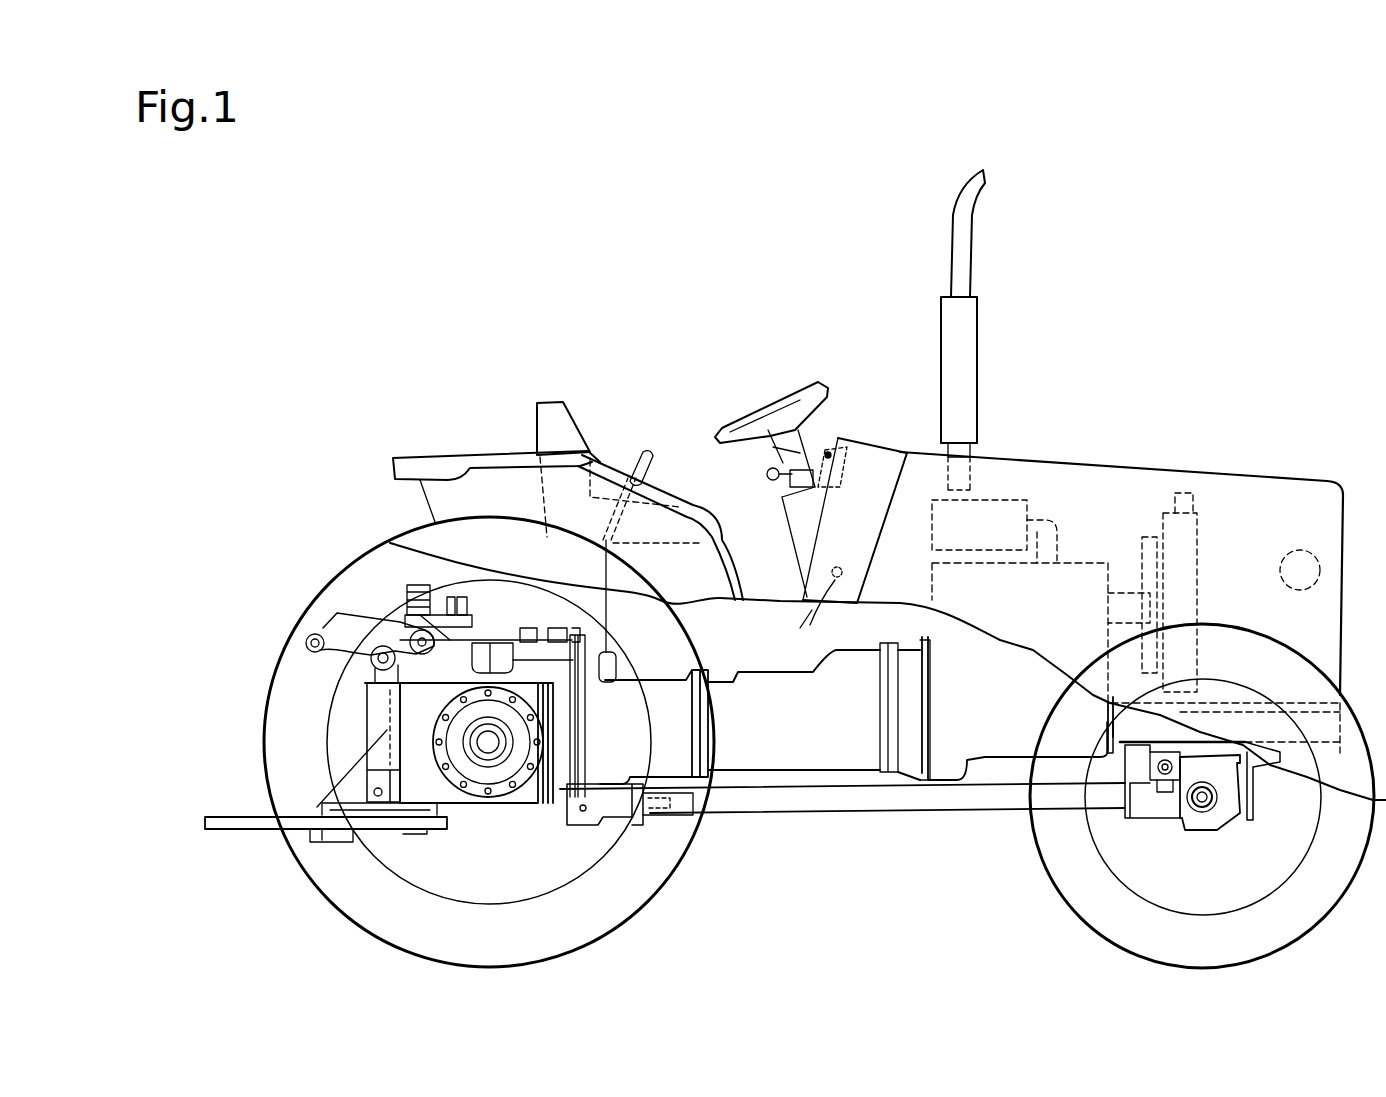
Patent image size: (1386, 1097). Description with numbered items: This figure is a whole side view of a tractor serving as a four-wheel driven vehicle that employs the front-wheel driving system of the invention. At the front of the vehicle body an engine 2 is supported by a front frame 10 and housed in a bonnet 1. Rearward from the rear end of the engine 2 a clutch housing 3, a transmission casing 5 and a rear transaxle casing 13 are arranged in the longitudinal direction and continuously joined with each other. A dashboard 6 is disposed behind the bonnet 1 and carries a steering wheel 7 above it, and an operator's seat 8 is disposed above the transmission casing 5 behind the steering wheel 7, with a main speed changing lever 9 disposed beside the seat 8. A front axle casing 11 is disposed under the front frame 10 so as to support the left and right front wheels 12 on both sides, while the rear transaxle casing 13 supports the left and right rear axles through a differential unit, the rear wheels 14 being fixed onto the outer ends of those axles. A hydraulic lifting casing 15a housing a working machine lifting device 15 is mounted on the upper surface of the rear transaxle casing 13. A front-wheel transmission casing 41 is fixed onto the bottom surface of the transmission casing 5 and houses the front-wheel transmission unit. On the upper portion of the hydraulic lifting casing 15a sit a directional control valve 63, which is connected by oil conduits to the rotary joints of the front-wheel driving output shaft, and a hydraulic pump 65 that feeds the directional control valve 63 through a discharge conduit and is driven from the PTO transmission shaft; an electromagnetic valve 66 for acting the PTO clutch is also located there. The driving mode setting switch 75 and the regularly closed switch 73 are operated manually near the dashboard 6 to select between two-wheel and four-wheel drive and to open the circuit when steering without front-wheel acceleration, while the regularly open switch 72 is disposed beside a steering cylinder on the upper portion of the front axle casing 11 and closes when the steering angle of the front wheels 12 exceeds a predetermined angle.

The bonnet 1 is at (1250, 475).
The engine 2 is at (998, 730).
The clutch housing 3 is at (810, 743).
The transmission casing 5 is at (672, 760).
The dashboard 6 is at (900, 450).
The steering wheel 7 is at (775, 390).
The operator's seat 8 is at (568, 400).
The main speed changing lever 9 is at (648, 450).
The front frame 10 is at (1133, 787).
The front axle casing 11 is at (1217, 807).
The front wheels 12 is at (1077, 910).
The rear transaxle casing 13 is at (492, 806).
The rear wheels 14 is at (580, 953).
The working machine lifting device 15 is at (262, 645).
The hydraulic lifting casing 15a is at (403, 611).
The front-wheel transmission casing 41 is at (615, 820).
The directional control valve 63 is at (557, 627).
The hydraulic pump 65 is at (486, 642).
The electromagnetic valve 66 is at (527, 627).
The regularly open switch 72 is at (1163, 792).
The regularly closed switch 73 is at (832, 460).
The driving mode setting switch 75 is at (820, 470).